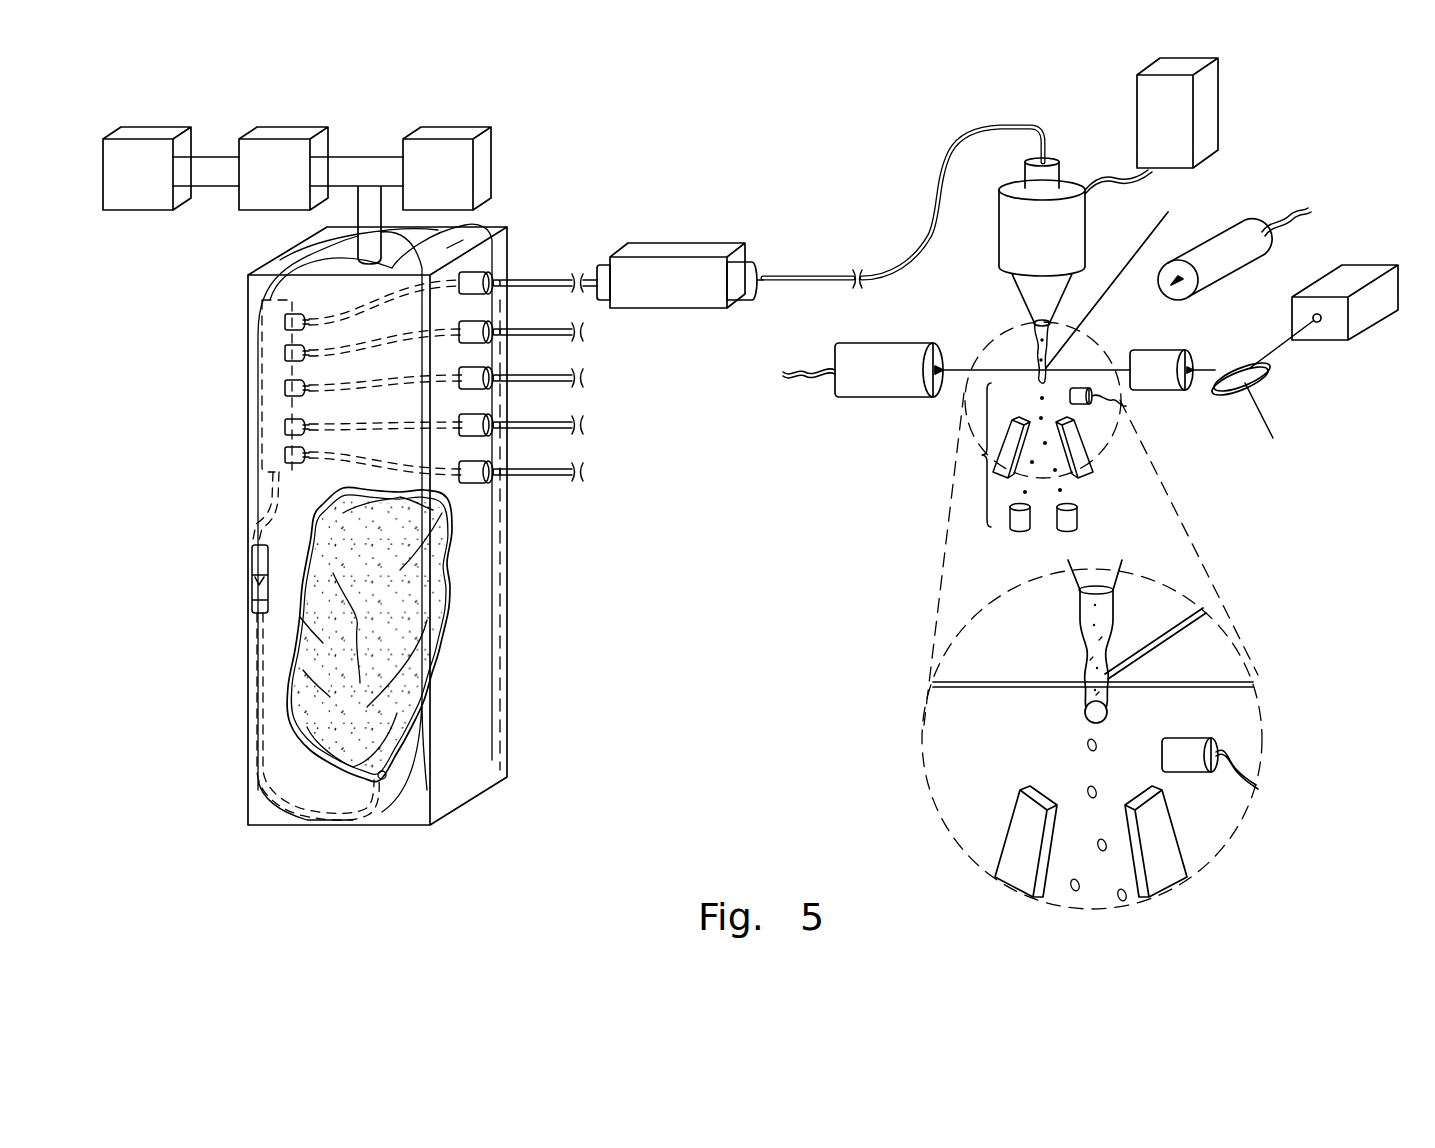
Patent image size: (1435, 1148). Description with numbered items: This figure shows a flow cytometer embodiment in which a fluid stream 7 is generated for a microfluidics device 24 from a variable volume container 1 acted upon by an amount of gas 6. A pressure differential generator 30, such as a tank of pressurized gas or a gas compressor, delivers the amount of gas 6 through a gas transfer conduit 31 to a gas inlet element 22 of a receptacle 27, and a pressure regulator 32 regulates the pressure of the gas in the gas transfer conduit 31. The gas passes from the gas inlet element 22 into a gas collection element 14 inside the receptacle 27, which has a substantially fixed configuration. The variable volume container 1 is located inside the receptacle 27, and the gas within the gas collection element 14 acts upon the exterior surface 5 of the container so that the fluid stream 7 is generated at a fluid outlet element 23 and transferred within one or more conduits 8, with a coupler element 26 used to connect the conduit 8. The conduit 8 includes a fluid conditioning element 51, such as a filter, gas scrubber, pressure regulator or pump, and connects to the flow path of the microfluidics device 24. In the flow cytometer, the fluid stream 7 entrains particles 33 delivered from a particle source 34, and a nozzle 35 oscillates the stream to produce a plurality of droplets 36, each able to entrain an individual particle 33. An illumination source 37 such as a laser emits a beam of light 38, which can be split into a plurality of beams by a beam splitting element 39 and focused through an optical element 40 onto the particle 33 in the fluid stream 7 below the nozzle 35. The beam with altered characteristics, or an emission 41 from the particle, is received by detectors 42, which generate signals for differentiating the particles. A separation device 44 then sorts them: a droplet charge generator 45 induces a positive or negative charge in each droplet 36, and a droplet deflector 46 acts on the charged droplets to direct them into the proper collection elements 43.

The variable volume container 1 is at (287, 720).
The exterior surface 5 is at (320, 723).
The amount of gas 6 is at (148, 133).
The fluid stream 7 is at (1035, 325).
The conduit 8 is at (505, 277).
The gas collection element 14 is at (298, 295).
The gas inlet element 22 is at (367, 243).
The fluid outlet element 23 is at (473, 470).
The microfluidics device 24 is at (1345, 134).
The coupler element 26 is at (258, 565).
The receptacle 27 is at (462, 243).
The pressure differential generator 30 is at (280, 133).
The gas transfer conduit 31 is at (367, 163).
The pressure regulator 32 is at (455, 133).
The particles 33 is at (1097, 657).
The particle source 34 is at (1202, 115).
The nozzle 35 is at (1043, 297).
The droplets 36 is at (1087, 747).
The illumination source 37 is at (1345, 275).
The beam of light 38 is at (1205, 362).
The beam splitting element 39 is at (1230, 383).
The optical element 40 is at (1155, 345).
The emission 41 is at (897, 702).
The detectors 42 is at (1226, 232).
The collection elements 43 is at (1022, 532).
The separation device 44 is at (975, 455).
The droplet charge generator 45 is at (1085, 405).
The droplet deflector 46 is at (1080, 468).
The fluid conditioning element 51 is at (700, 258).